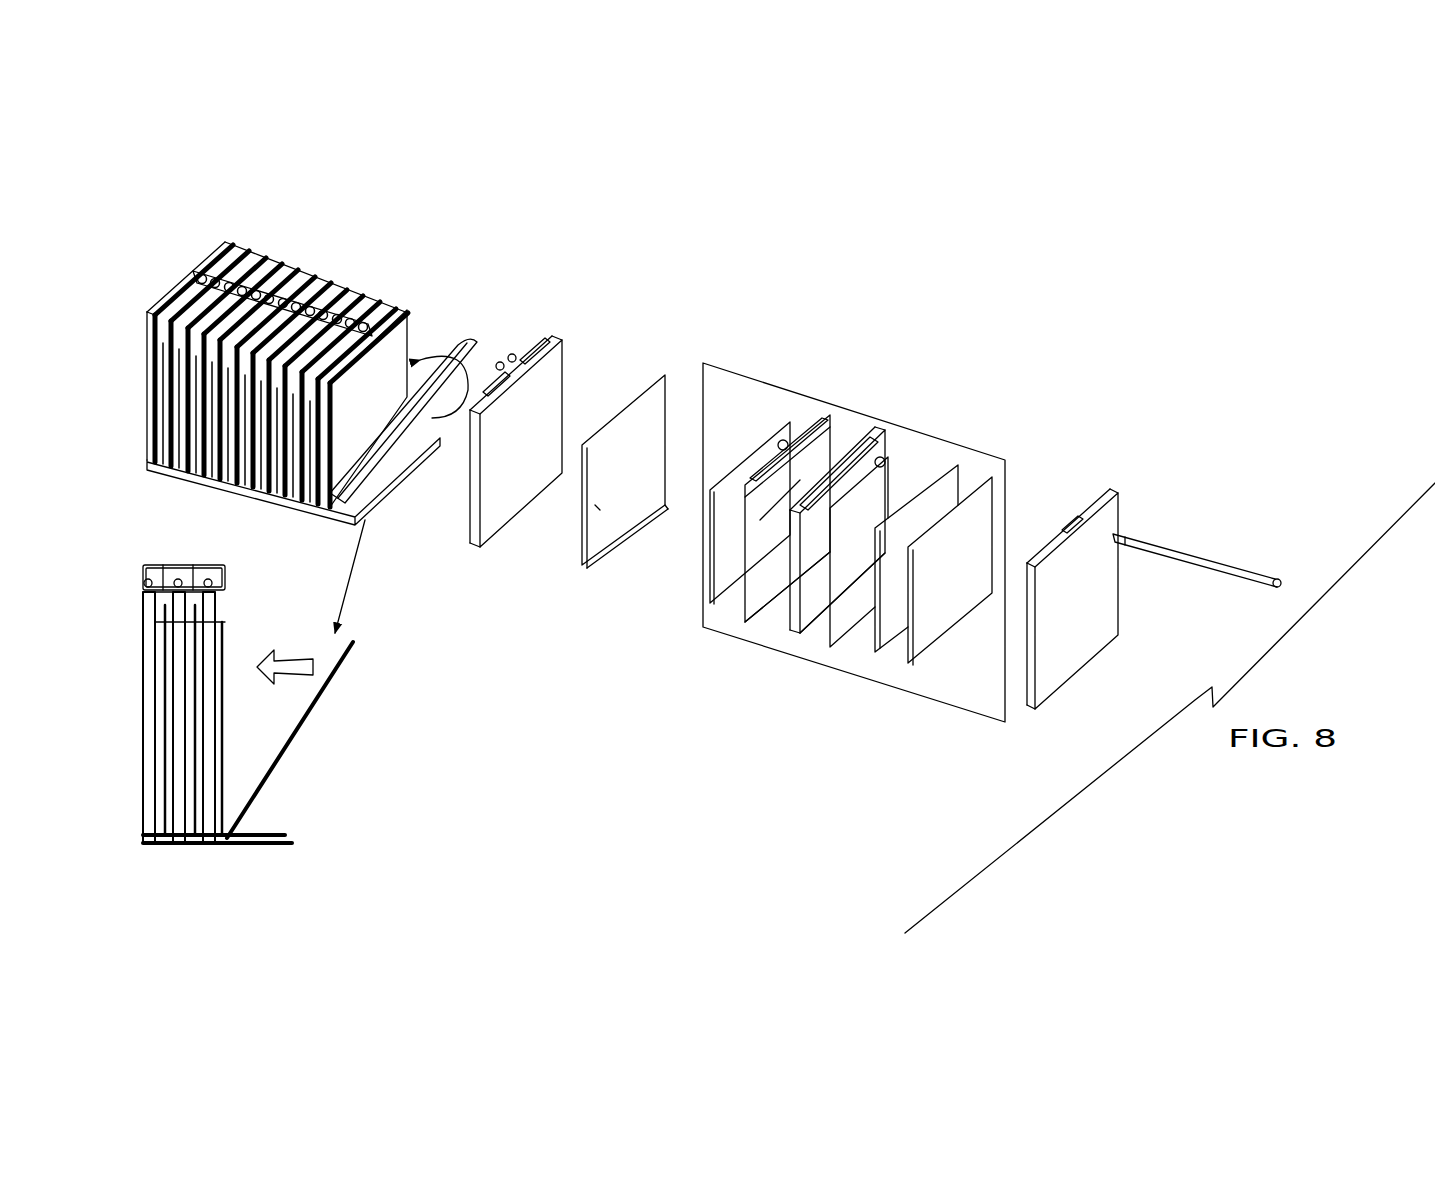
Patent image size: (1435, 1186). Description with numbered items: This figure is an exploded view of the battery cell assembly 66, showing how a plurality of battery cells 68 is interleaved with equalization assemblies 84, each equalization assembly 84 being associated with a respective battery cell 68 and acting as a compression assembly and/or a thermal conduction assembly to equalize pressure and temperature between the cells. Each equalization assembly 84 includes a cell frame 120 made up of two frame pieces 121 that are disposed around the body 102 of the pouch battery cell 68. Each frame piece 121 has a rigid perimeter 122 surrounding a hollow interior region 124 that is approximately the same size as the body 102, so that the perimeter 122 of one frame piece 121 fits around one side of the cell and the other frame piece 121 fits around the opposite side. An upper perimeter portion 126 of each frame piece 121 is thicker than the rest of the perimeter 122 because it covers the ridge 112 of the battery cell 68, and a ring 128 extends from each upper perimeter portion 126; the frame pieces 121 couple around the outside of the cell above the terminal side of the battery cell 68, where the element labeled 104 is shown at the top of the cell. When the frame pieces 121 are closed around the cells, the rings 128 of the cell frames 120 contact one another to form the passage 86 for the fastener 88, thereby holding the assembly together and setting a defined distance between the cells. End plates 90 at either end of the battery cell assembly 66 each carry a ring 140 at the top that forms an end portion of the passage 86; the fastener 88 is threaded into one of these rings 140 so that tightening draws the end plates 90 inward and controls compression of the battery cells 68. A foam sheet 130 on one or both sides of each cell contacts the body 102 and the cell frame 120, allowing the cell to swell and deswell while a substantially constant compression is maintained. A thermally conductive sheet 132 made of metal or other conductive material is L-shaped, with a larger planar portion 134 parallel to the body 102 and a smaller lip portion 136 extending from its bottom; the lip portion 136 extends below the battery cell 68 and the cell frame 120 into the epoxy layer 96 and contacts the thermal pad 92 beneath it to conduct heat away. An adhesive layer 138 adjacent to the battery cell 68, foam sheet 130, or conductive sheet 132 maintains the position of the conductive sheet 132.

The battery cell assembly 66 is at (158, 256).
The passage 86 is at (192, 276).
The end plate 90 is at (150, 415).
The thermal pad 92 is at (386, 510).
The epoxy layer 96 is at (406, 462).
The battery cell 68 is at (573, 380).
The cell frame 120 is at (560, 324).
The terminal 104 is at (485, 364).
The ring 128 is at (505, 344).
The thermally conductive sheet 132 is at (630, 385).
The larger planar portion 134 is at (597, 508).
The lip portion 136 is at (617, 560).
The adhesive layer 138 is at (723, 532).
The equalization assembly 84 is at (847, 303).
The frame piece 121 is at (767, 483).
The upper perimeter portion 126 is at (811, 410).
The foam sheet 130 is at (945, 490).
The ring 140 is at (1064, 527).
The fastener 88 is at (1222, 551).
The ridge 112 is at (735, 616).
The perimeter 122 is at (736, 592).
The hollow interior region 124 is at (764, 588).
The body 102 is at (781, 621).